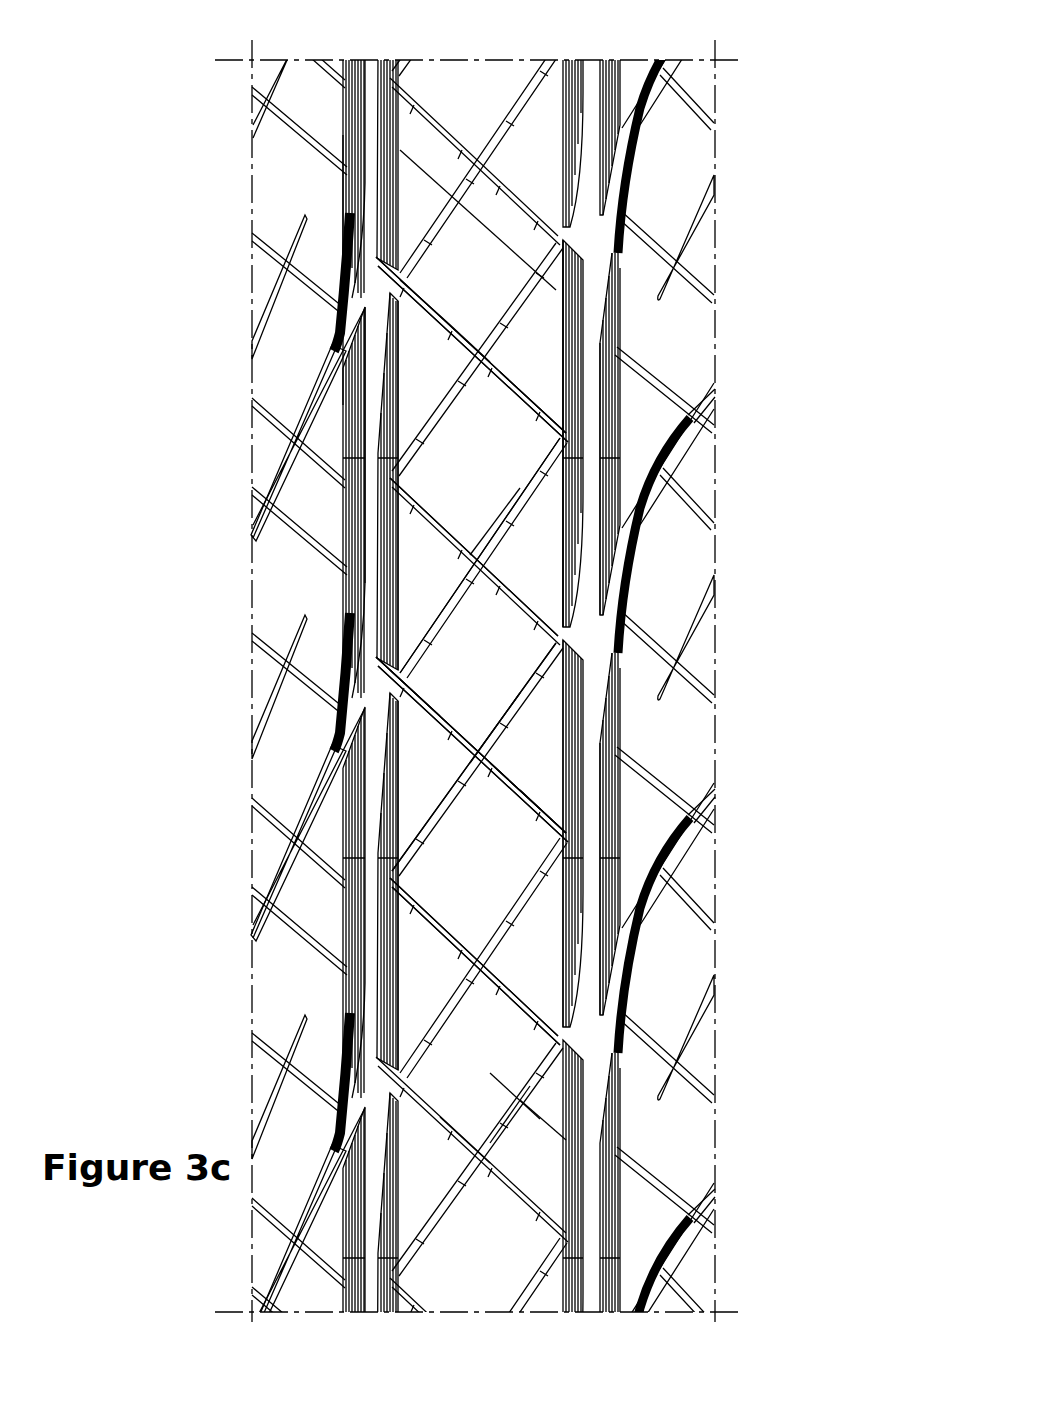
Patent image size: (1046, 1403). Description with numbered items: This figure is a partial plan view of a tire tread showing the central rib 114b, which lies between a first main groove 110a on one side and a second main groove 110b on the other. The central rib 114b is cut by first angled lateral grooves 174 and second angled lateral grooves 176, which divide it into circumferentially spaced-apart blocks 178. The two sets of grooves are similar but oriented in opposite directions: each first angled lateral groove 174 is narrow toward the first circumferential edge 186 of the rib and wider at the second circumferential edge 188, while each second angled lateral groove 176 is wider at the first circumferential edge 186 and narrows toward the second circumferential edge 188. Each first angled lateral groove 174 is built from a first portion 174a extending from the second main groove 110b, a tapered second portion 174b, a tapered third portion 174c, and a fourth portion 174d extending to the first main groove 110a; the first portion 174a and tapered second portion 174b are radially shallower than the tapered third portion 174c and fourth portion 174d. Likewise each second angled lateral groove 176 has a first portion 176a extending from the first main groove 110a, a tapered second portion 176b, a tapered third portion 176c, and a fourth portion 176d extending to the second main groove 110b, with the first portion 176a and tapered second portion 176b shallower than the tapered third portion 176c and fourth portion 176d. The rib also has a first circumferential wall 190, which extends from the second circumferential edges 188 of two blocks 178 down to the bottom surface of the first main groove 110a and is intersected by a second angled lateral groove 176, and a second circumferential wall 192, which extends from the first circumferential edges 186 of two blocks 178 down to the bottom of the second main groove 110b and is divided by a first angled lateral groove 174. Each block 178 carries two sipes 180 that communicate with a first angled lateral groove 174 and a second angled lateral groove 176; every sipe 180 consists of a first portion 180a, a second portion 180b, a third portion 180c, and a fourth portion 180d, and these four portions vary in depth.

The first main groove 110a is at (374, 74).
The second main groove 110b is at (598, 88).
The central rib 114b is at (481, 96).
The first angled lateral groove 174 is at (434, 724).
The first portion 174a is at (537, 816).
The tapered second portion 174b is at (519, 774).
The tapered third portion 174c is at (483, 725).
The fourth portion 174d is at (414, 708).
The second angled lateral groove 176 is at (565, 582).
The first portion 176a is at (429, 508).
The tapered second portion 176b is at (455, 537).
The tapered third portion 176c is at (486, 537).
The fourth portion 176d is at (542, 562).
The block 178 is at (516, 652).
The sipe 180 is at (509, 898).
The first portion 180a is at (485, 1140).
The second portion 180b is at (512, 1117).
The third portion 180c is at (545, 1080).
The fourth portion 180d is at (563, 1045).
The first circumferential edge 186 is at (573, 334).
The second circumferential edge 188 is at (398, 408).
The first circumferential wall 190 is at (398, 850).
The second circumferential wall 192 is at (603, 783).